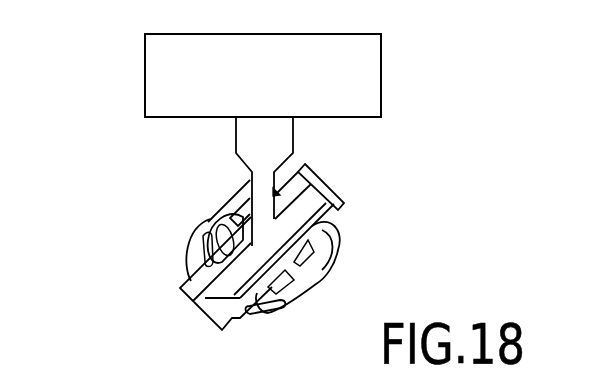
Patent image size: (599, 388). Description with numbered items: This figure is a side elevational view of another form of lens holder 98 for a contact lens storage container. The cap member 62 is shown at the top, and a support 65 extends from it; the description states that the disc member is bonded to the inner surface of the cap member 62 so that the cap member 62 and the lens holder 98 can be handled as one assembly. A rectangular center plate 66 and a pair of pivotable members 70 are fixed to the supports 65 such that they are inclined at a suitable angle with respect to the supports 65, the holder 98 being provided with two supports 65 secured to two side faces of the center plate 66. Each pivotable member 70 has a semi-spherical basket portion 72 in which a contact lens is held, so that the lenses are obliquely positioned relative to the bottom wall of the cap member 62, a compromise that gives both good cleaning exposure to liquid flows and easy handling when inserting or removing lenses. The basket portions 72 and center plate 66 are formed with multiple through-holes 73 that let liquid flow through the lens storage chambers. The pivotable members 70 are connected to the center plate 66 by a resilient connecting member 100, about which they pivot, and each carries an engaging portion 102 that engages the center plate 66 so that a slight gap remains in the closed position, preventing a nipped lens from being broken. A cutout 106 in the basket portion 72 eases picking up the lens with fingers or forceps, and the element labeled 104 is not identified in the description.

The cap member 62 is at (154, 65).
The support 65 is at (277, 140).
The center plate 66 is at (323, 188).
The pivotable member 70 is at (218, 184).
The basket portion 72 is at (195, 245).
The through-hole 73 is at (265, 303).
The lens holder 98 is at (410, 85).
The resilient connecting member 100 is at (336, 207).
The engaging portion 102 is at (205, 308).
The side rail 104 is at (320, 228).
The cutout 106 is at (220, 223).